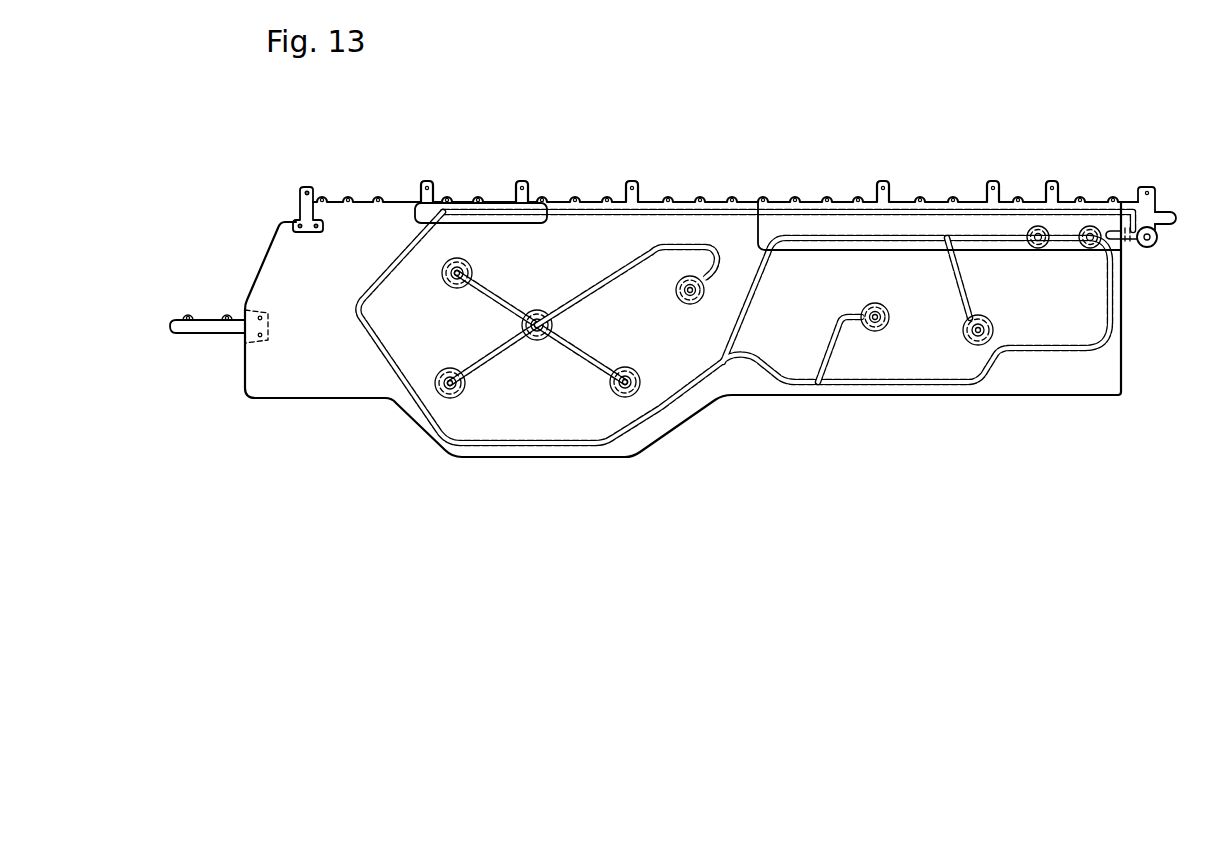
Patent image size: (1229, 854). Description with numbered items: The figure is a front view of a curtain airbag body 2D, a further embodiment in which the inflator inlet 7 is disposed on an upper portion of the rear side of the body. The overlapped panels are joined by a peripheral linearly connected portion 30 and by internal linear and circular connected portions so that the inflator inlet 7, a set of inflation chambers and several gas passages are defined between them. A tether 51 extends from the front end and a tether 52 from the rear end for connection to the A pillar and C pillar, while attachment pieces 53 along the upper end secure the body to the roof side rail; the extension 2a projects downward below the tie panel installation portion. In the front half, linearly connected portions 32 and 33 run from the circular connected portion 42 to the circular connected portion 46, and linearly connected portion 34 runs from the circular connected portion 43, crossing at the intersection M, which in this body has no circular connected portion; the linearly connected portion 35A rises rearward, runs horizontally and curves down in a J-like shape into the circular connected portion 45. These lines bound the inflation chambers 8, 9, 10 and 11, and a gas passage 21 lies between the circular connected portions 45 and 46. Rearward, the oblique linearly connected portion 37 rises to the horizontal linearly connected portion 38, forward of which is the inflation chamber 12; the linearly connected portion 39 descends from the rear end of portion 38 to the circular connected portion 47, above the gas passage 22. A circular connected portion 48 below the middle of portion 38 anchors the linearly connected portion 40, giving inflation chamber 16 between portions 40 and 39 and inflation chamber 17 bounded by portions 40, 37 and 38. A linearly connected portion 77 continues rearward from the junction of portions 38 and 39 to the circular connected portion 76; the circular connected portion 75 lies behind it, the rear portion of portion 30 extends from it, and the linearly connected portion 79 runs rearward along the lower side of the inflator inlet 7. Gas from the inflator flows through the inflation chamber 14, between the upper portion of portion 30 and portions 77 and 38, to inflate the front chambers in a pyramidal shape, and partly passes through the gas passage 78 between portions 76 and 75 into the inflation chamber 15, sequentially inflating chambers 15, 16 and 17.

The curtain airbag body 2D is at (773, 122).
The extension 2a is at (607, 452).
The linearly connected portion 30 is at (588, 210).
The attachment pieces 53 is at (298, 201).
The tether 52 is at (1165, 214).
The tether 51 is at (198, 334).
The inflation chamber 14 is at (858, 222).
The gas passage 78 is at (1063, 228).
The inflator inlet 7 is at (1134, 242).
The linearly connected portion 79 is at (1127, 242).
The circular connected portion 75 is at (1084, 246).
The circular connected portion 76 is at (1036, 246).
The linearly connected portion 77 is at (993, 240).
The linearly connected portion 38 is at (873, 246).
The linearly connected portion 37 is at (767, 280).
The linearly connected portion 39 is at (957, 280).
The linearly connected portion 40 is at (838, 352).
The circular connected portion 47 is at (990, 322).
The circular connected portion 48 is at (889, 313).
The circular connected portion 45 is at (704, 287).
The circular connected portion 46 is at (611, 394).
The circular connected portion 42 is at (470, 266).
The circular connected portion 43 is at (459, 397).
The linearly connected portion 32 is at (489, 286).
The linearly connected portion 33 is at (552, 326).
The linearly connected portion 34 is at (512, 349).
The linearly connected portion 35A is at (605, 279).
The intersection M is at (548, 310).
The inflation chamber 8 is at (561, 273).
The inflation chamber 9 is at (448, 344).
The inflation chamber 10 is at (560, 401).
The inflation chamber 11 is at (640, 325).
The inflation chamber 12 is at (710, 348).
The gas passage 21 is at (659, 360).
The inflation chamber 17 is at (814, 311).
The inflation chamber 15 is at (1053, 330).
The inflation chamber 16 is at (925, 366).
The gas passage 22 is at (996, 358).